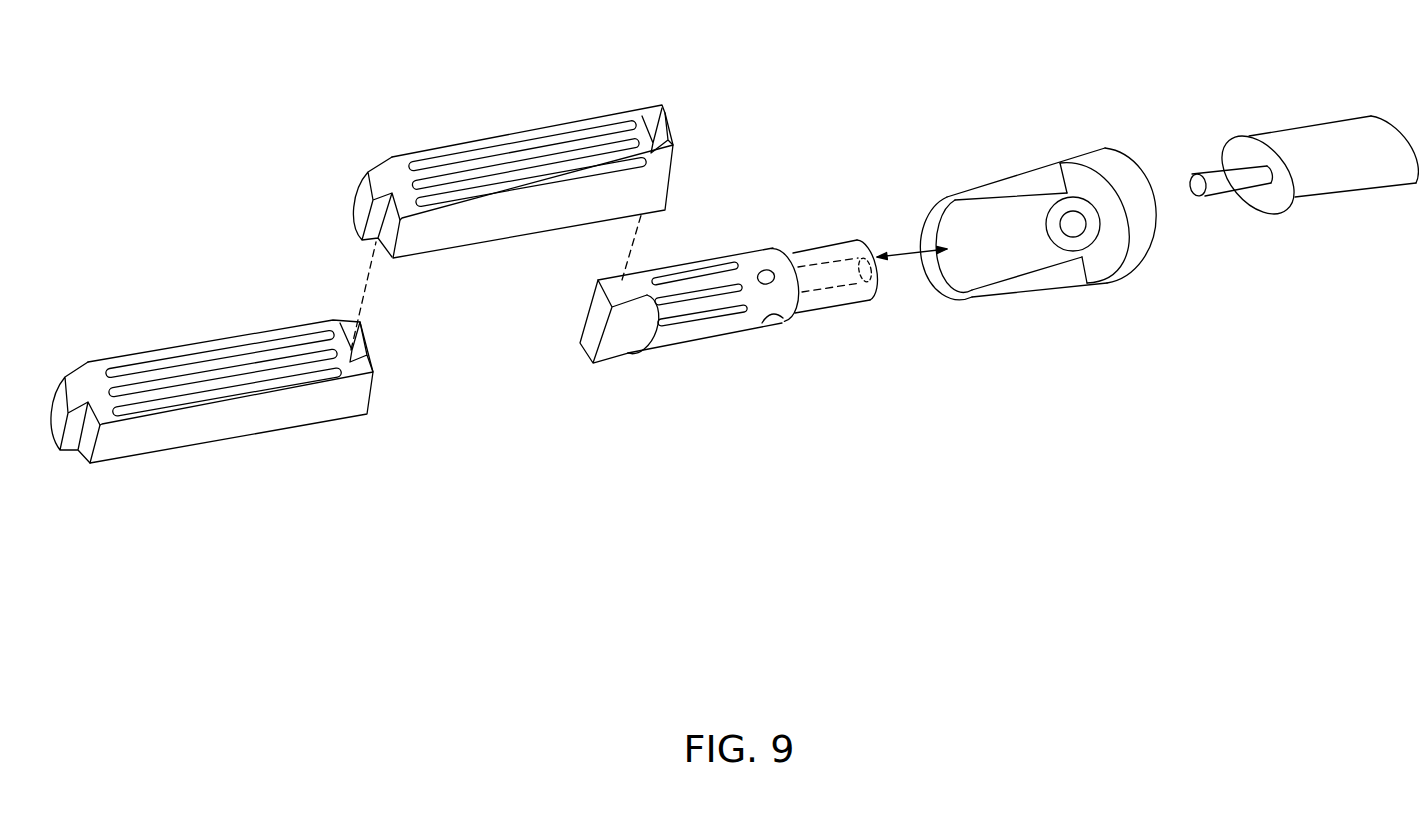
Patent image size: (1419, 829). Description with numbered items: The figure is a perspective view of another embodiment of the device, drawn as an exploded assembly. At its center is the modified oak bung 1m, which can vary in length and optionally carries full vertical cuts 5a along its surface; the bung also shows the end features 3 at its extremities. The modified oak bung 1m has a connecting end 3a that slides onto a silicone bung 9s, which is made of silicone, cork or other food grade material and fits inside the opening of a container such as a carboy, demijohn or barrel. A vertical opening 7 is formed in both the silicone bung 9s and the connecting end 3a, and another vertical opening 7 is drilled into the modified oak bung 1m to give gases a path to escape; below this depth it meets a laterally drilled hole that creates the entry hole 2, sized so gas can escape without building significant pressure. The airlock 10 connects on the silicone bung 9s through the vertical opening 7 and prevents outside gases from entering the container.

The modified oak bung 1m is at (728, 337).
The entry hole 2 is at (765, 255).
The engagement portion 3 is at (68, 377).
The connecting end 3a is at (833, 310).
The full vertical cuts 5a is at (488, 142).
The vertical opening 7 is at (877, 253).
The silicone bung 9s is at (1032, 168).
The airlock 10 is at (1297, 127).